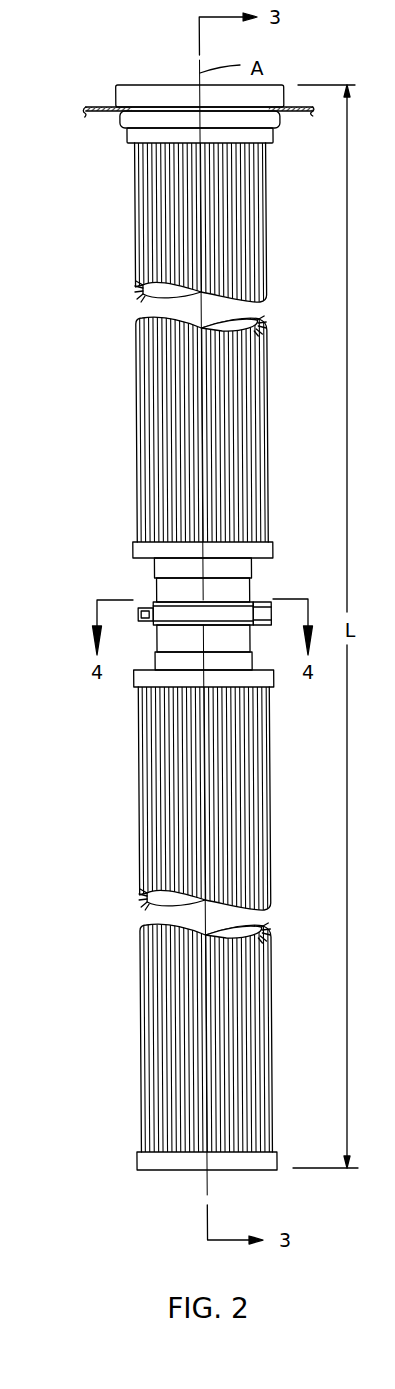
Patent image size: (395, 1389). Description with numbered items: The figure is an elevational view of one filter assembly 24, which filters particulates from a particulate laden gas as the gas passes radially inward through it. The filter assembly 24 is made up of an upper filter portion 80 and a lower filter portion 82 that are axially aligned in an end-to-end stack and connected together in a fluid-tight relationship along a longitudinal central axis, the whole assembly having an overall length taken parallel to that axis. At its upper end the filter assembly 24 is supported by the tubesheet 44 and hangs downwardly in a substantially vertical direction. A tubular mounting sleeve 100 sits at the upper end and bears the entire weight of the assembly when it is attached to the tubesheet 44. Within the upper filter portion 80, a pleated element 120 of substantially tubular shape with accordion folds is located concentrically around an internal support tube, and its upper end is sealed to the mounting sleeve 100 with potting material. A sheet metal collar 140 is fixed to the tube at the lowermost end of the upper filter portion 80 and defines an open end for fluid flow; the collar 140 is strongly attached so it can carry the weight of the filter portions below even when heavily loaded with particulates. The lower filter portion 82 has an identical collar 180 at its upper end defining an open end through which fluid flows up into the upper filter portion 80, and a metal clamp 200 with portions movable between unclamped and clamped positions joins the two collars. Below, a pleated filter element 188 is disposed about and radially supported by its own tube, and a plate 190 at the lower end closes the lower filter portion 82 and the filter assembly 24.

The tubular mounting sleeve 100 is at (139, 98).
The tubesheet 44 is at (105, 107).
The pleated element 120 is at (163, 222).
The upper filter portion 80 is at (131, 387).
The filter assembly 24 is at (116, 547).
The collar 140 is at (150, 571).
The clamp 200 is at (146, 601).
The collar 180 is at (147, 652).
The lower filter portion 82 is at (136, 855).
The pleated filter element 188 is at (160, 1075).
The plate 190 is at (160, 1160).